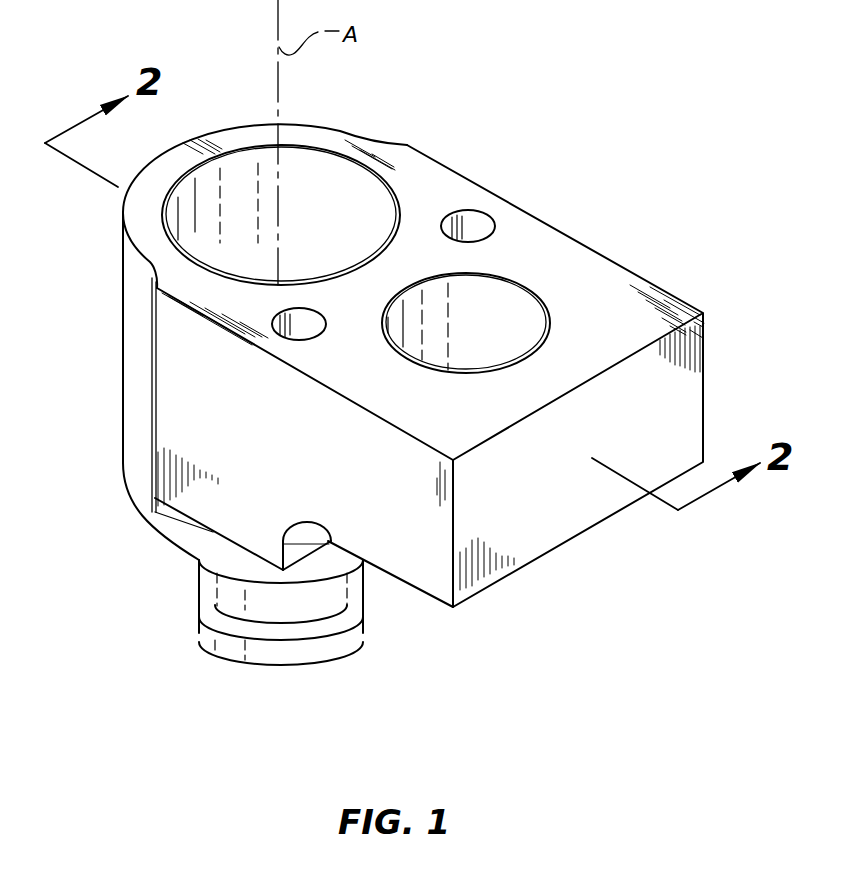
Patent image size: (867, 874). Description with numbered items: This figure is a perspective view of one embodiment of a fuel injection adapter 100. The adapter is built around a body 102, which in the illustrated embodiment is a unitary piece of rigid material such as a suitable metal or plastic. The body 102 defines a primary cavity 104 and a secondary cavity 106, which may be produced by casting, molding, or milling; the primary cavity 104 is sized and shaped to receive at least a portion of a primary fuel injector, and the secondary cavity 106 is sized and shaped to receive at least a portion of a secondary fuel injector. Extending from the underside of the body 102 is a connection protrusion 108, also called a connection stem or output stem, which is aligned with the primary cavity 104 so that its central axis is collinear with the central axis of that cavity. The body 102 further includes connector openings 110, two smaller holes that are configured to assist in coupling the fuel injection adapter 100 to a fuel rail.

The fuel injection adapter 100 is at (626, 188).
The body 102 is at (595, 318).
The primary cavity 104 is at (192, 234).
The secondary cavity 106 is at (498, 318).
The connection protrusion 108 is at (176, 608).
The connector openings 110 is at (474, 230).